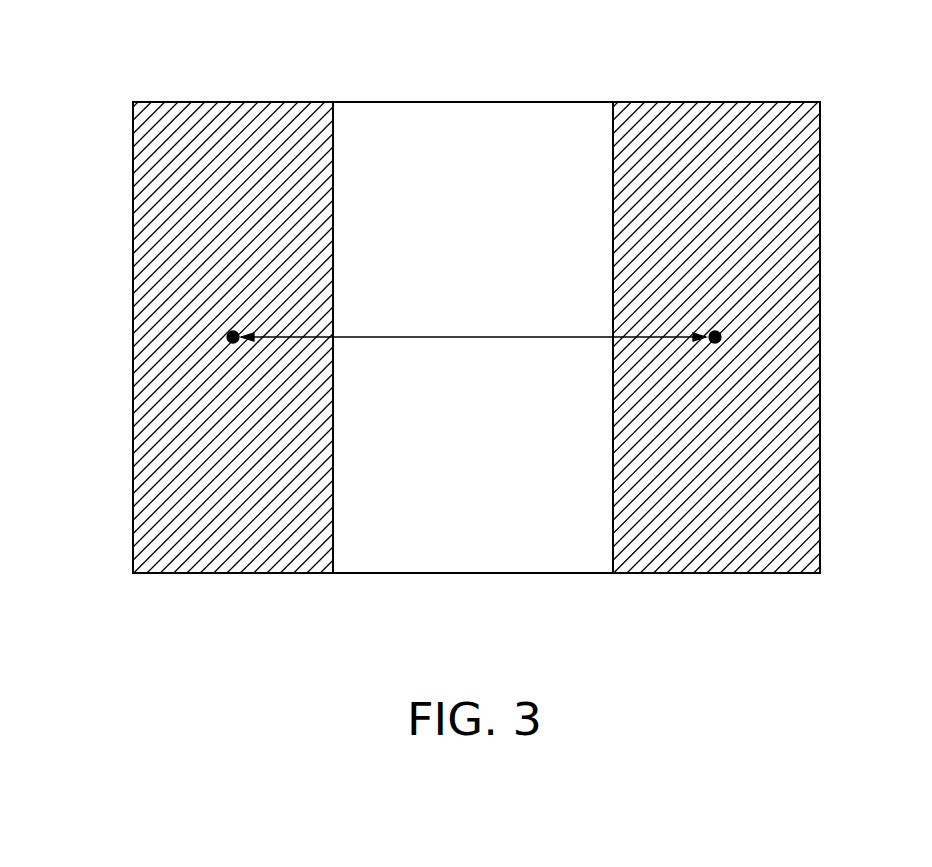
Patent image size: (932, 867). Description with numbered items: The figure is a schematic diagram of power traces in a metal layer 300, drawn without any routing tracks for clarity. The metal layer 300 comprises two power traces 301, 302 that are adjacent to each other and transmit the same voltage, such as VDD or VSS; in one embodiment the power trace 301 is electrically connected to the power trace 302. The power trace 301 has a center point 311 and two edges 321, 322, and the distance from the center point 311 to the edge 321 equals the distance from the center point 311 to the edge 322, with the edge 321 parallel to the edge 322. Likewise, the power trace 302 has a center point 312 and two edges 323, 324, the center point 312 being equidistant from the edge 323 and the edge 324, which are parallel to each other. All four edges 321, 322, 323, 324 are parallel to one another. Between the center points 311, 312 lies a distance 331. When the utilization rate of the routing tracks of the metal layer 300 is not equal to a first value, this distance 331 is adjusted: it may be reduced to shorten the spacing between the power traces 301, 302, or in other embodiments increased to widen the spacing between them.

The metal layer 300 is at (860, 61).
The power trace 301 is at (334, 549).
The power trace 302 is at (612, 549).
The center point 311 is at (227, 340).
The center point 312 is at (722, 335).
The edge 321 is at (133, 166).
The edge 322 is at (335, 162).
The edge 323 is at (612, 166).
The edge 324 is at (820, 162).
The distance 331 is at (473, 321).